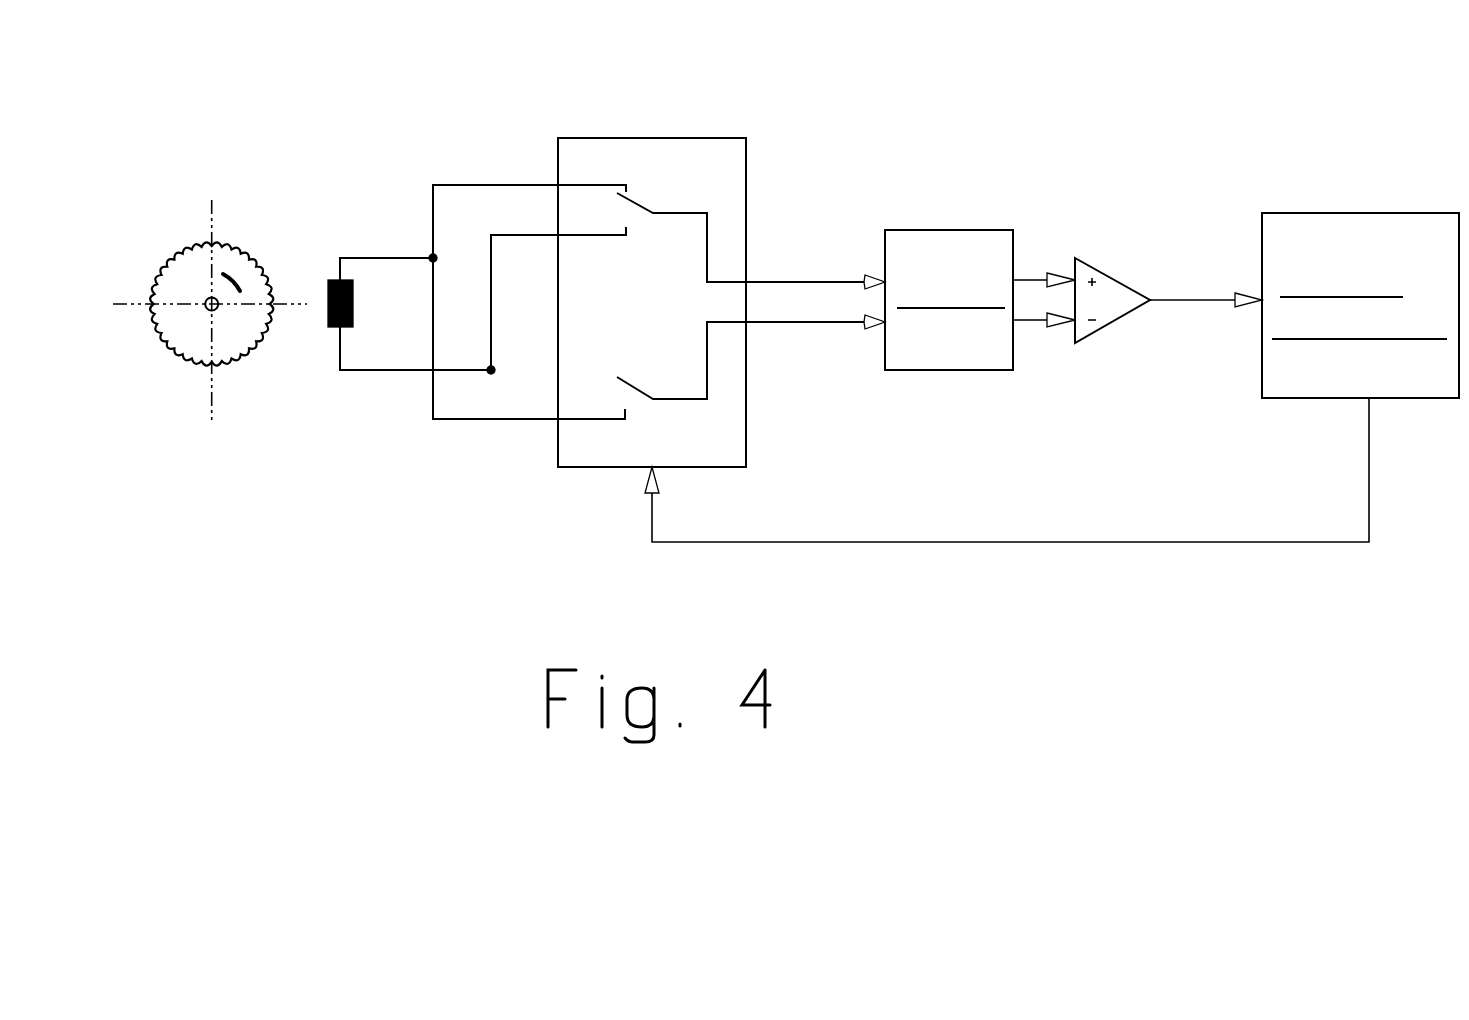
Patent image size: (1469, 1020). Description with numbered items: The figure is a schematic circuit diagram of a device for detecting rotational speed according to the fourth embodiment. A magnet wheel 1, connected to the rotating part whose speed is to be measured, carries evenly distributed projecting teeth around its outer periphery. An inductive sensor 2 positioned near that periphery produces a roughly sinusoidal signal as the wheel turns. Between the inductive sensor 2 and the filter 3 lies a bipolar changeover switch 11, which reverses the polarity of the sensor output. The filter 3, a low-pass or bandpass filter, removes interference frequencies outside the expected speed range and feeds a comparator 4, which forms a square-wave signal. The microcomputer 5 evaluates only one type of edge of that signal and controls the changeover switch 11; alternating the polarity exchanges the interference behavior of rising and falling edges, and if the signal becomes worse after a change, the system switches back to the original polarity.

The magnet wheel 1 is at (247, 278).
The inductive sensor 2 is at (355, 300).
The bipolar changeover switch 11 is at (678, 165).
The filter 3 is at (956, 250).
The comparator 4 is at (1110, 297).
The microcomputer 5 is at (1303, 250).